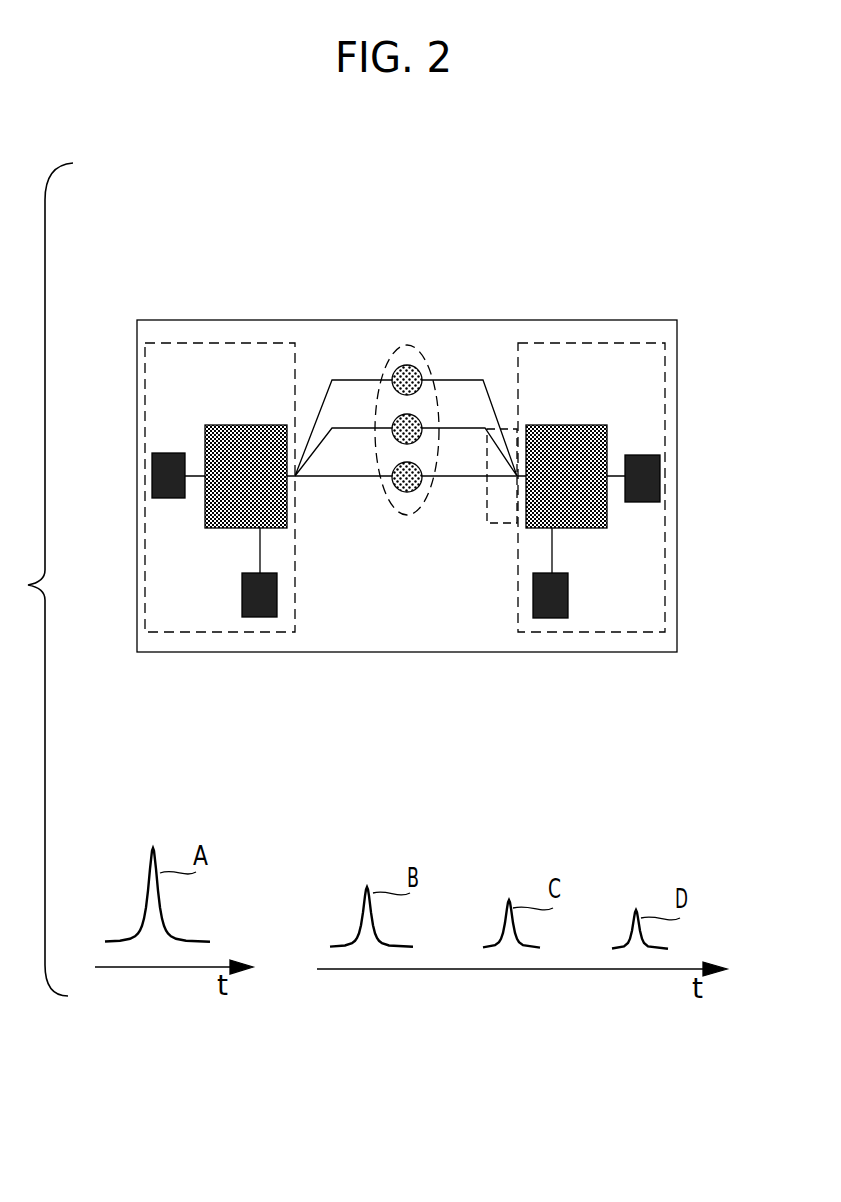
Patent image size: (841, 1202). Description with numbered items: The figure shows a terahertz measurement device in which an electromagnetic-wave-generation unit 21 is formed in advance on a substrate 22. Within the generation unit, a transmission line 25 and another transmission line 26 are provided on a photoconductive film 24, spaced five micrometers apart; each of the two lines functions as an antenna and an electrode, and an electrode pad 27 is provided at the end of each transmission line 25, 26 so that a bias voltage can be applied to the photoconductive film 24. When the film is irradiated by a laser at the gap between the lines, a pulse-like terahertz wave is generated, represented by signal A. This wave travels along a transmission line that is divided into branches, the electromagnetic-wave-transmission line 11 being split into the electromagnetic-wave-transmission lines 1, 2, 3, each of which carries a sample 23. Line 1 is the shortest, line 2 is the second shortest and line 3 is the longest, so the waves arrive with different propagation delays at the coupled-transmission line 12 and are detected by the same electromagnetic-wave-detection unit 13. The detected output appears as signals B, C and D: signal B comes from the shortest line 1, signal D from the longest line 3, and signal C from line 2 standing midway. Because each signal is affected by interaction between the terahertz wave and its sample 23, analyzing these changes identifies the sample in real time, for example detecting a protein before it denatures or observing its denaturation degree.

The electromagnetic-wave-transmission line 1 is at (462, 477).
The electromagnetic-wave-transmission line 2 is at (450, 428).
The electromagnetic-wave-transmission line 3 is at (440, 380).
The electromagnetic-wave-transmission line 11 is at (496, 339).
The coupled-transmission line 12 is at (500, 523).
The electromagnetic-wave-detection unit 13 is at (665, 383).
The electromagnetic-wave-generation unit 21 is at (207, 633).
The substrate 22 is at (335, 653).
The sample 23 is at (400, 515).
The photoconductive film 24 is at (246, 425).
The transmission line 25 is at (192, 474).
The transmission line 26 is at (260, 558).
The electrode pad 27 is at (152, 455).